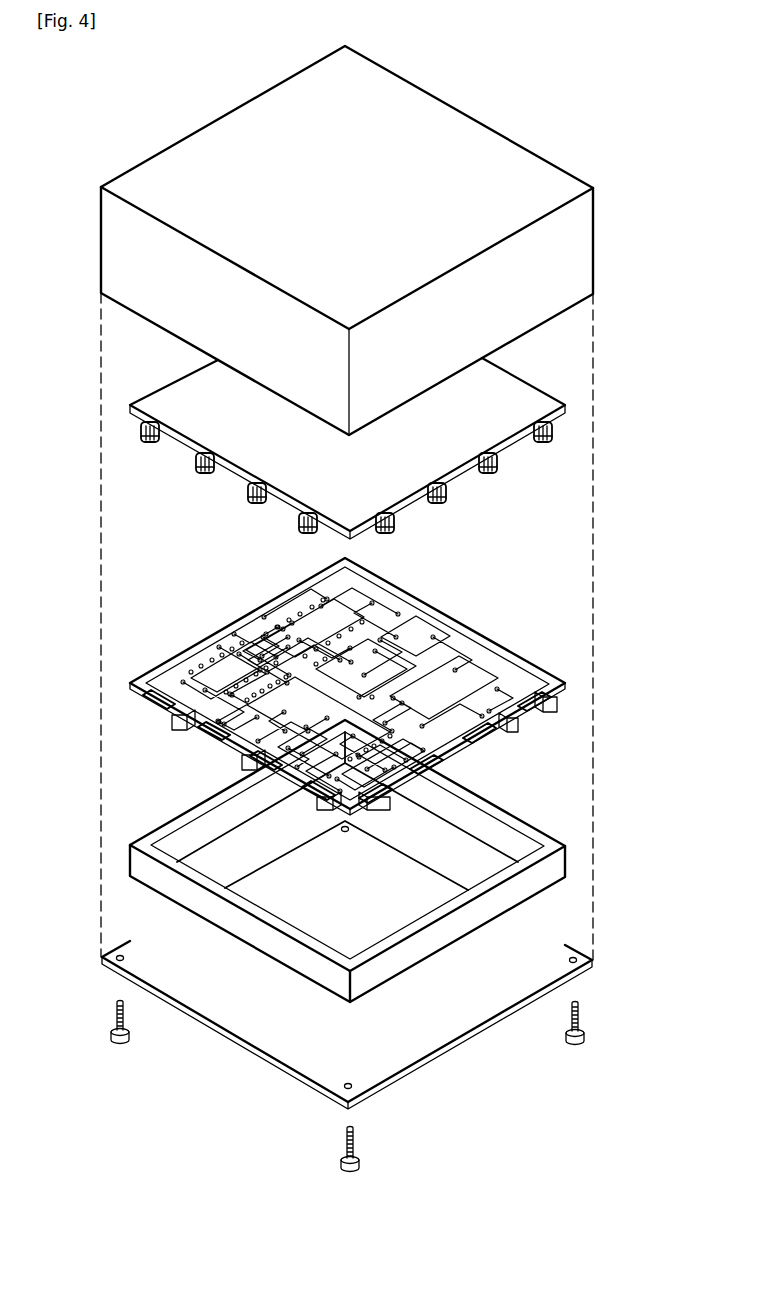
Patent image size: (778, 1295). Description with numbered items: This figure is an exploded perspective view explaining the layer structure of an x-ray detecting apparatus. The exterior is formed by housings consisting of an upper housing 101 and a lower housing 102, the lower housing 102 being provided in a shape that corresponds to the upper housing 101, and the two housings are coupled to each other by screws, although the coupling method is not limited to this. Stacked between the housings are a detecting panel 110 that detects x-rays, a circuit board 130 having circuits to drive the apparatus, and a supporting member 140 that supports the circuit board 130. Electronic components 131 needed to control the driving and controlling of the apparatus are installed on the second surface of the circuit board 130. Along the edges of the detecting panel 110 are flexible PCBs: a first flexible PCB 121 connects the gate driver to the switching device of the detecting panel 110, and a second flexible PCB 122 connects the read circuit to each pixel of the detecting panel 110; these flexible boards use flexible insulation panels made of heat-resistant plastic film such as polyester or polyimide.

The upper housing 101 is at (573, 262).
The lower housing 102 is at (553, 945).
The detecting panel 110 is at (547, 402).
The first flexible PCB 121 is at (437, 504).
The second flexible PCB 122 is at (255, 498).
The circuit board 130 is at (548, 676).
The electronic components 131 is at (218, 748).
The supporting member 140 is at (538, 838).